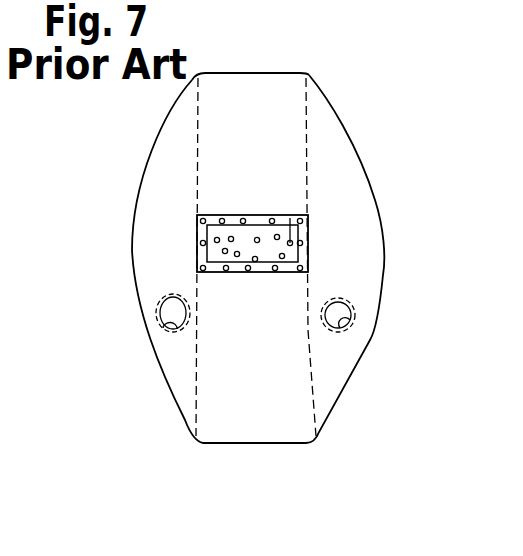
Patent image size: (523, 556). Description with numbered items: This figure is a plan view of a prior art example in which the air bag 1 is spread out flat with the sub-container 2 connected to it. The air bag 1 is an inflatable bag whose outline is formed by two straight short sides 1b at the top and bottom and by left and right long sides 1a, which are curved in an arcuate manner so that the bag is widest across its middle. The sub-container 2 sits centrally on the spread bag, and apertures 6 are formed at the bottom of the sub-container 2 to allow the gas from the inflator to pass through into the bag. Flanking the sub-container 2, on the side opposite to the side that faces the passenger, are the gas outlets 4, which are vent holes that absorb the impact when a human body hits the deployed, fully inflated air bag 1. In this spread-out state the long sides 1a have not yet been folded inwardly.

The air bag 1 is at (264, 266).
The long sides 1a is at (381, 230).
The short sides 1b is at (266, 74).
The sub-container 2 is at (309, 243).
The gas outlets 4 is at (176, 332).
The apertures 6 is at (290, 218).